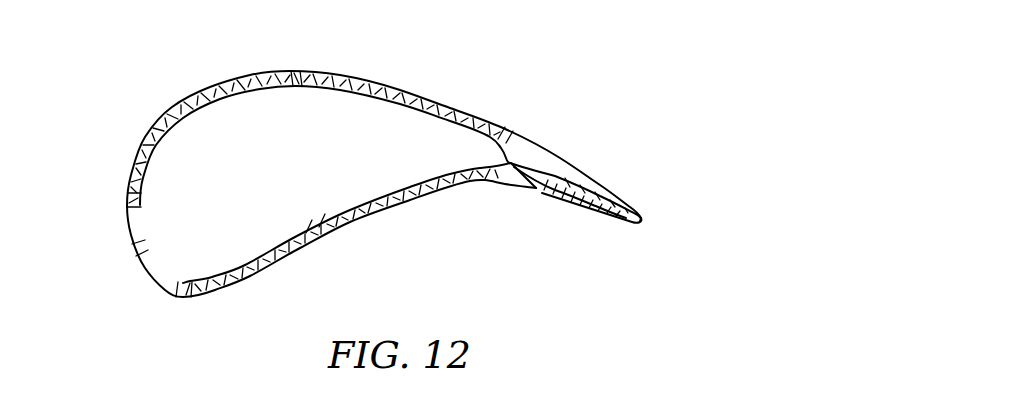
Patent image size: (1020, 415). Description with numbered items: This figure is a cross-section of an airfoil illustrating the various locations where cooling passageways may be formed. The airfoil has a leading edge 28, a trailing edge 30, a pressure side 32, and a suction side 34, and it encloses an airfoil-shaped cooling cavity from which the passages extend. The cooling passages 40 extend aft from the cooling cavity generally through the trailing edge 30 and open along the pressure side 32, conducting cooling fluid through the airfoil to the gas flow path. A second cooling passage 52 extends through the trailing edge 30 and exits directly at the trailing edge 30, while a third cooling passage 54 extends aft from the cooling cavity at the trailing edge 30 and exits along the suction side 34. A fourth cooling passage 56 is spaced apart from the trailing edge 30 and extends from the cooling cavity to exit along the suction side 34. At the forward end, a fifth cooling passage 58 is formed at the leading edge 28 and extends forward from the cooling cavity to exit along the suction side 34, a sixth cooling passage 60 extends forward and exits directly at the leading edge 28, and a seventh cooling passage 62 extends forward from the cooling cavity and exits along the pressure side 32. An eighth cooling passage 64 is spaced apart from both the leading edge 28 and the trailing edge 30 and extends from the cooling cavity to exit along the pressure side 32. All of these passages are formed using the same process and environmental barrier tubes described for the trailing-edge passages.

The leading edge 28 is at (143, 293).
The trailing edge 30 is at (646, 228).
The pressure side 32 is at (412, 212).
The suction side 34 is at (398, 72).
The cooling passages 40 is at (530, 197).
The second cooling passage 52 is at (648, 218).
The third cooling passage 54 is at (505, 123).
The fourth cooling passage 56 is at (298, 65).
The fifth cooling passage 58 is at (120, 202).
The sixth cooling passage 60 is at (130, 255).
The seventh cooling passage 62 is at (182, 300).
The eighth cooling passage 64 is at (327, 238).